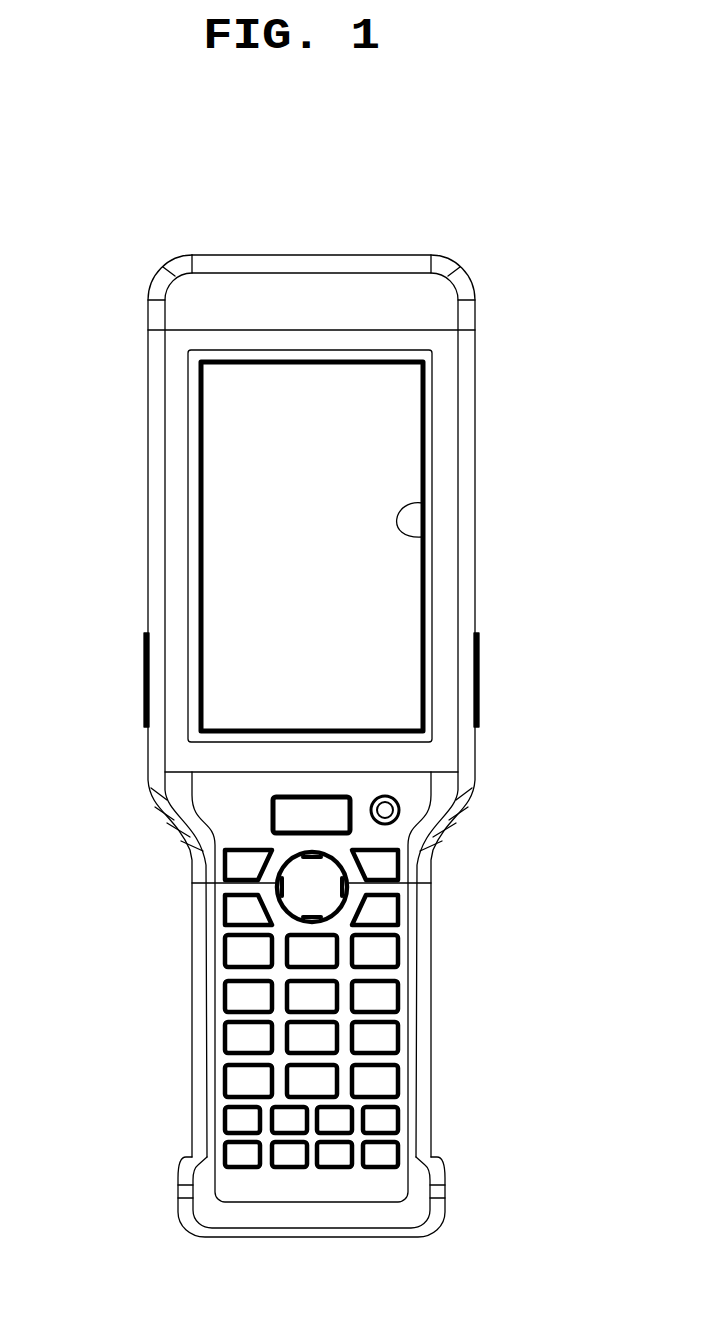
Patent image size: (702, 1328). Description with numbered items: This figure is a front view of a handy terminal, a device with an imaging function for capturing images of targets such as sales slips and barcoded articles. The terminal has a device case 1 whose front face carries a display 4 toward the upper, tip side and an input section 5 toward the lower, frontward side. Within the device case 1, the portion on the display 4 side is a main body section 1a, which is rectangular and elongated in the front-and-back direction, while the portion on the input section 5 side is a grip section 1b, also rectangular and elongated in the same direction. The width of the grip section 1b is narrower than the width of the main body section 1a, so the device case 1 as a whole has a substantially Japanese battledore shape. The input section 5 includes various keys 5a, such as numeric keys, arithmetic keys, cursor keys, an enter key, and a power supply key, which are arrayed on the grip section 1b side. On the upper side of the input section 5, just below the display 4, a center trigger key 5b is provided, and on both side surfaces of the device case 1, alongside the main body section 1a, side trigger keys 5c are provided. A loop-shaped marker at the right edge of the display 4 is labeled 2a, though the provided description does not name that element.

The device case 1 is at (153, 266).
The main body section 1a is at (158, 520).
The grip section 1b is at (190, 1047).
The touch panel 2a is at (423, 532).
The display 4 is at (390, 435).
The input section 5 is at (238, 950).
The keys 5a is at (400, 812).
The center trigger key 5b is at (292, 815).
The side trigger keys 5c is at (146, 688).